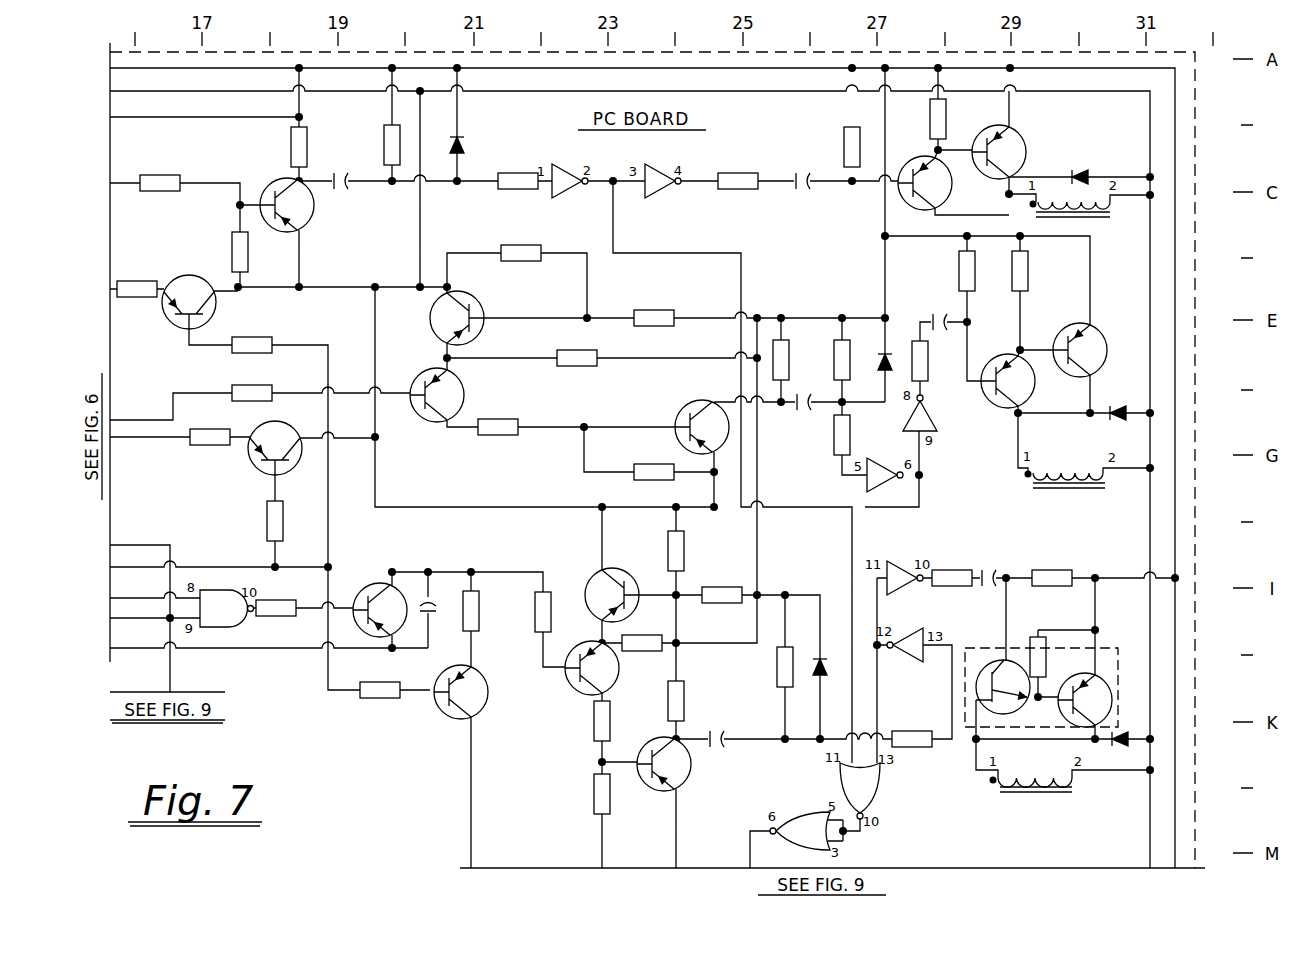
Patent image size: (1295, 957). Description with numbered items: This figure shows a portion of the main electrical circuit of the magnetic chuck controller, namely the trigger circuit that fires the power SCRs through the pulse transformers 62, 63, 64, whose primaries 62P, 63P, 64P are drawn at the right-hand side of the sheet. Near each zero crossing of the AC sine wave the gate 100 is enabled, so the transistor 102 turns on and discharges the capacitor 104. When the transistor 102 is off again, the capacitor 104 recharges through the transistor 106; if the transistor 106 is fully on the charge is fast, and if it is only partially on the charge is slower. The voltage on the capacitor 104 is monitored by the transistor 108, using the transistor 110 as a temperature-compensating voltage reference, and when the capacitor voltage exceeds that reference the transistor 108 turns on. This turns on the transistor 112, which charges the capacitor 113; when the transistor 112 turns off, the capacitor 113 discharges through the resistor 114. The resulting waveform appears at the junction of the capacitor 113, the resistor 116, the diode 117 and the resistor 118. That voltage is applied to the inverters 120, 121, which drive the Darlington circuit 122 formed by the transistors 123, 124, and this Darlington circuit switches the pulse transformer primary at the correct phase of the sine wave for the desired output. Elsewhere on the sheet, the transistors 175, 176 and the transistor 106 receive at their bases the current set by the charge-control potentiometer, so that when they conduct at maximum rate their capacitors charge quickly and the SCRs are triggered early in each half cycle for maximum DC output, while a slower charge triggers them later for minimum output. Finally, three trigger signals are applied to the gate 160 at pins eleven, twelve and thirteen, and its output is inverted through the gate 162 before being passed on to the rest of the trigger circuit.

The pulse transformer 62 is at (992, 788).
The primary of pulse transformer 62P is at (1045, 782).
The pulse transformer 63 is at (1071, 461).
The primary of pulse transformer 63P is at (1093, 470).
The pulse transformer 64 is at (1024, 217).
The primary of pulse transformer 64P is at (1113, 205).
The gate 100 is at (230, 629).
The transistor 102 is at (353, 588).
The capacitor 104 is at (441, 613).
The transistor 106 is at (437, 720).
The transistor 108 is at (563, 690).
The transistor 110 is at (593, 588).
The transistor 112 is at (641, 785).
The capacitor 113 is at (717, 750).
The resistor 114 is at (684, 702).
The resistor 116 is at (777, 669).
The diode 117 is at (817, 663).
The resistor 118 is at (922, 748).
The inverter 120 is at (912, 632).
The inverter 121 is at (900, 560).
The Darlington circuit 122 is at (1108, 647).
The transistor 123 is at (1072, 673).
The transistor 124 is at (988, 660).
The gate 160 is at (870, 797).
The gate 162 is at (792, 818).
The transistor 175 is at (216, 309).
The transistor 176 is at (257, 470).